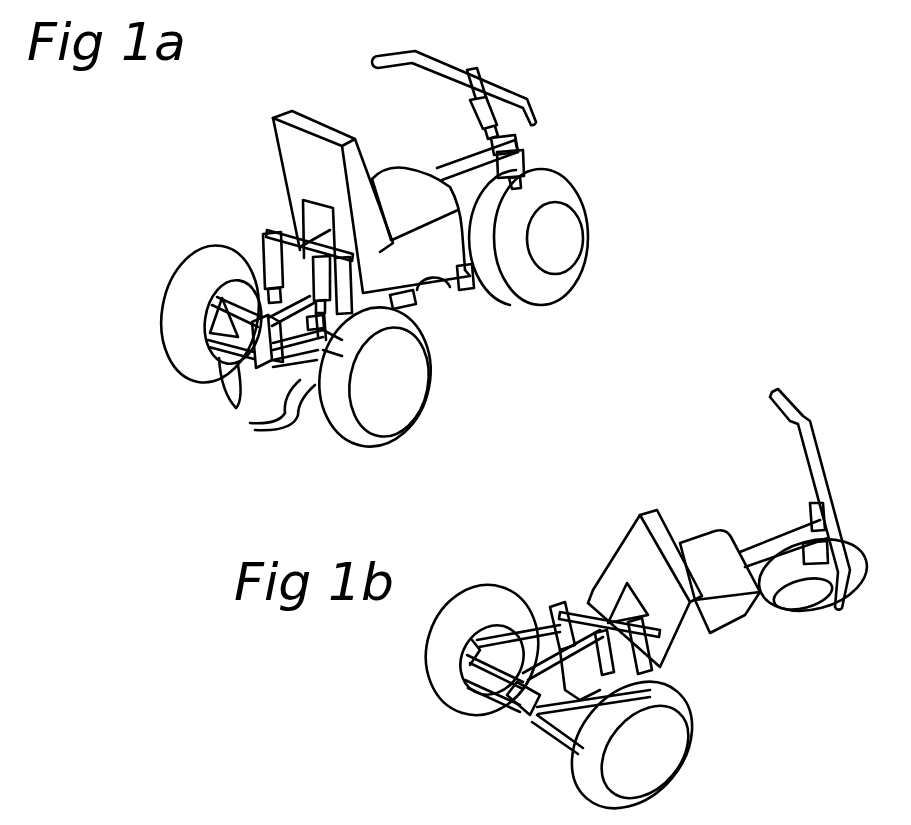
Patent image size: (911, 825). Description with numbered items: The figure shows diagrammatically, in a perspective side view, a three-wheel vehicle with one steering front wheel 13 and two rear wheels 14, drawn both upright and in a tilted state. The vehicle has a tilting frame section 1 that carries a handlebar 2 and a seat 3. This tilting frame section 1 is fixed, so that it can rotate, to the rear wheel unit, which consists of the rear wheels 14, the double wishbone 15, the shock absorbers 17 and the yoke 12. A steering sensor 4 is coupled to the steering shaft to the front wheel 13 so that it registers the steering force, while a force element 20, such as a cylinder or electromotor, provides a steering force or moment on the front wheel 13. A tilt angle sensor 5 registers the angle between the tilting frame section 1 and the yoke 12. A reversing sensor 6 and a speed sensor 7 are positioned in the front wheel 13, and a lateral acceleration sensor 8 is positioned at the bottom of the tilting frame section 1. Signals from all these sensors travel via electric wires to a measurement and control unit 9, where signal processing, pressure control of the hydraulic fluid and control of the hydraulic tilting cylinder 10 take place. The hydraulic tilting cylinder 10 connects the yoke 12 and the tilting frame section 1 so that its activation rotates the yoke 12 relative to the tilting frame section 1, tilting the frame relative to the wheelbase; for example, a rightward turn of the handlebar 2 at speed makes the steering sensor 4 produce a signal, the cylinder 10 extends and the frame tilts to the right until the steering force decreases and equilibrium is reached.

The tilting frame section 1 is at (437, 167).
The handlebar 2 is at (467, 80).
The seat 3 is at (396, 184).
The steering sensor 4 is at (472, 116).
The tilt angle sensor 5 is at (297, 218).
The reversing sensor 6 is at (598, 238).
The speed sensor 7 is at (557, 243).
The lateral acceleration sensor 8 is at (473, 286).
The measurement and control unit 9 is at (414, 308).
The hydraulic tilting cylinder 10 is at (237, 303).
The yoke 12 is at (280, 227).
The front wheel 13 is at (569, 237).
The rear wheels 14 is at (190, 362).
The double wishbone 15 is at (250, 423).
The shock absorbers 17 is at (273, 253).
The force element 20 is at (533, 163).